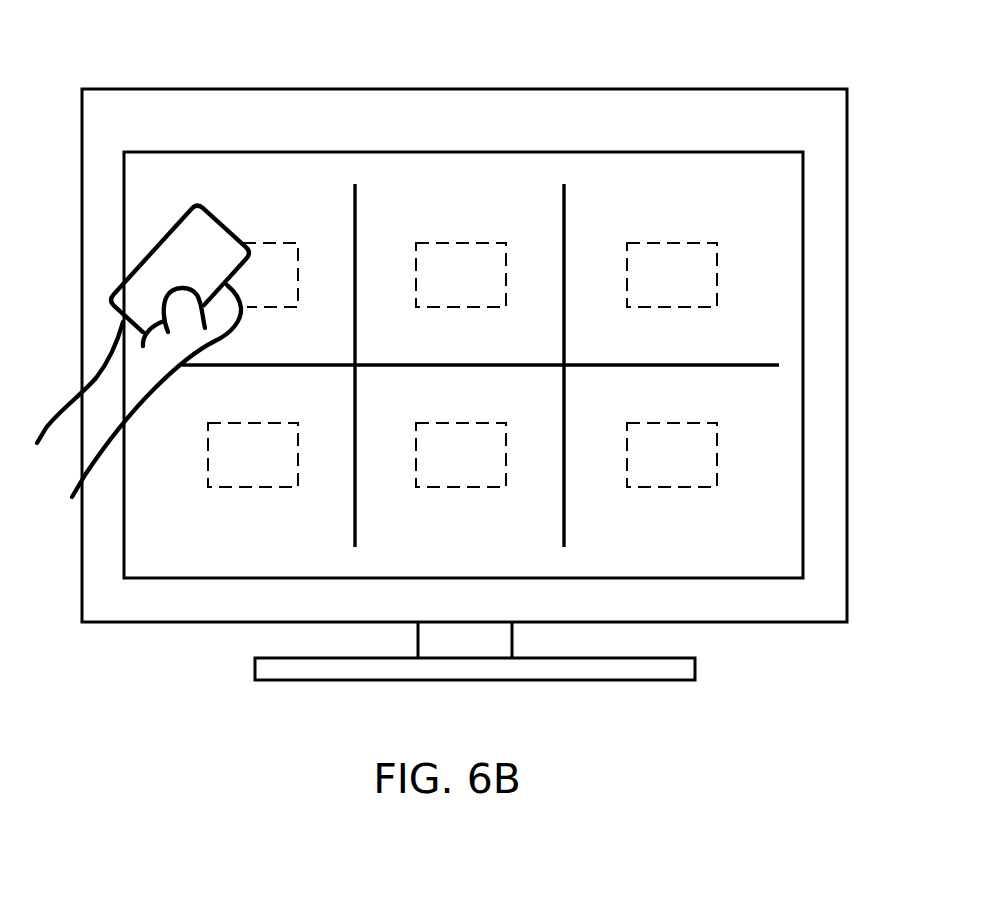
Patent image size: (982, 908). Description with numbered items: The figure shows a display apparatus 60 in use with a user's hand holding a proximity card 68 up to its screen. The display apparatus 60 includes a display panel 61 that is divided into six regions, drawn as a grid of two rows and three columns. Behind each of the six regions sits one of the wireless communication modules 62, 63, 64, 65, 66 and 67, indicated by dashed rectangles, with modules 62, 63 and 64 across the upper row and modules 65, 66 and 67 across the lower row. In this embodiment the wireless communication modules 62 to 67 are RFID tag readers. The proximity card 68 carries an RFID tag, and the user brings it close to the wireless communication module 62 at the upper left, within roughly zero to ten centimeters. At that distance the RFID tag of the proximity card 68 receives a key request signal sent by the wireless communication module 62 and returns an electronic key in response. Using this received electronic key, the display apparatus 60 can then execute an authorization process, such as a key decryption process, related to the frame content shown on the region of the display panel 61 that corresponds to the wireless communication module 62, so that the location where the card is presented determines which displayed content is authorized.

The display apparatus 60 is at (812, 90).
The display panel 61 is at (742, 152).
The wireless communication module 62 is at (249, 242).
The wireless communication module 63 is at (458, 242).
The wireless communication module 64 is at (668, 242).
The wireless communication module 65 is at (249, 488).
The wireless communication module 66 is at (460, 488).
The wireless communication module 67 is at (667, 488).
The proximity card 68 is at (197, 203).